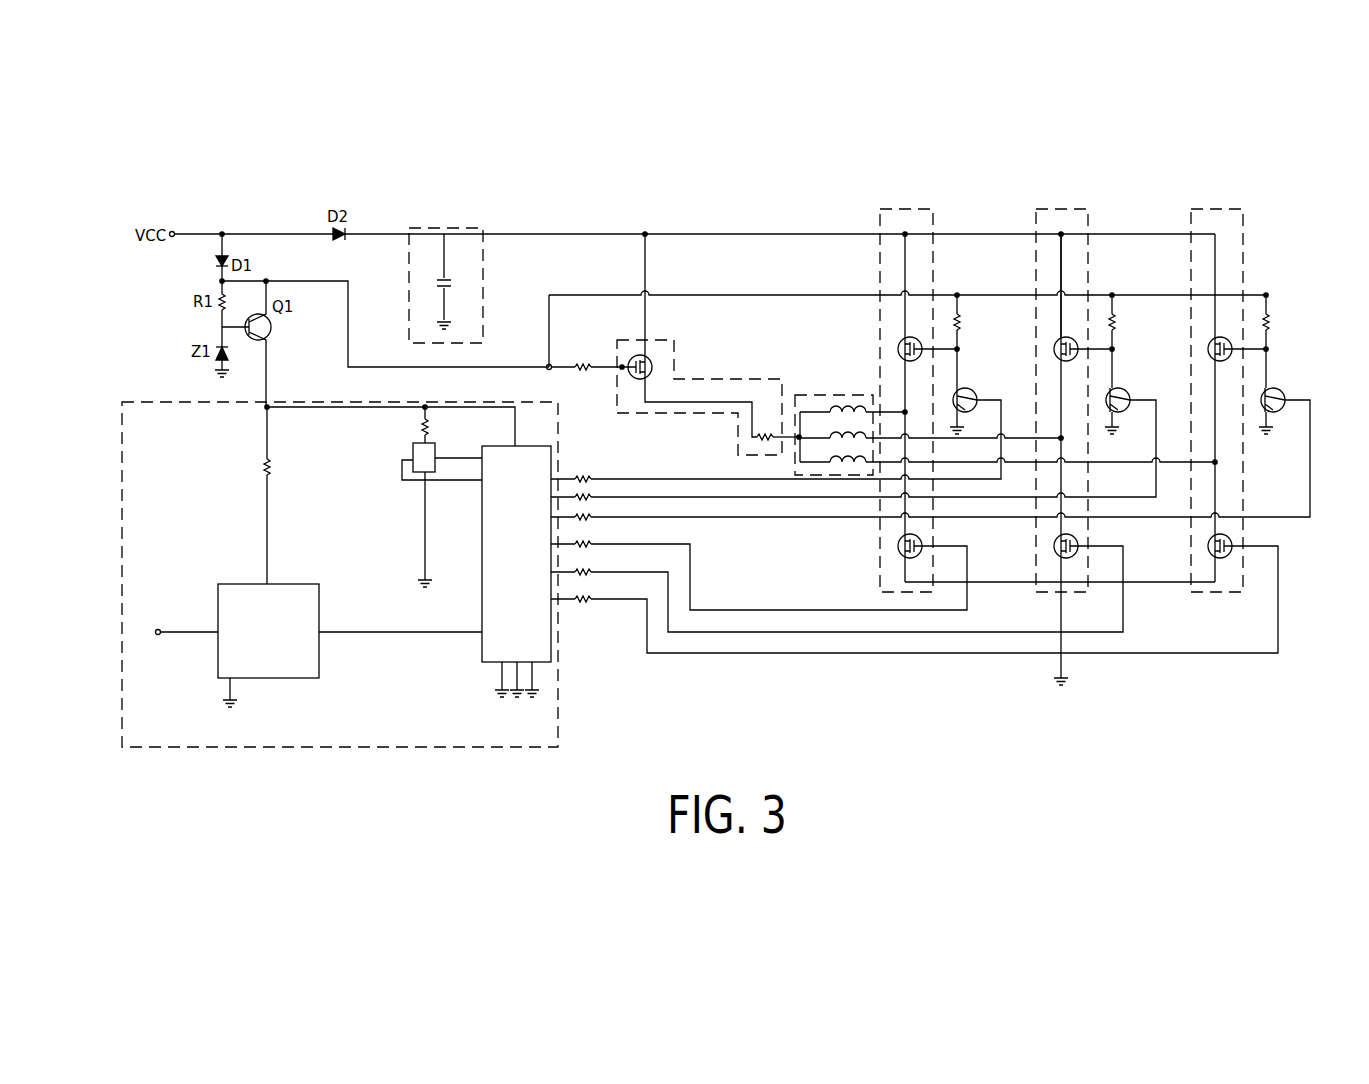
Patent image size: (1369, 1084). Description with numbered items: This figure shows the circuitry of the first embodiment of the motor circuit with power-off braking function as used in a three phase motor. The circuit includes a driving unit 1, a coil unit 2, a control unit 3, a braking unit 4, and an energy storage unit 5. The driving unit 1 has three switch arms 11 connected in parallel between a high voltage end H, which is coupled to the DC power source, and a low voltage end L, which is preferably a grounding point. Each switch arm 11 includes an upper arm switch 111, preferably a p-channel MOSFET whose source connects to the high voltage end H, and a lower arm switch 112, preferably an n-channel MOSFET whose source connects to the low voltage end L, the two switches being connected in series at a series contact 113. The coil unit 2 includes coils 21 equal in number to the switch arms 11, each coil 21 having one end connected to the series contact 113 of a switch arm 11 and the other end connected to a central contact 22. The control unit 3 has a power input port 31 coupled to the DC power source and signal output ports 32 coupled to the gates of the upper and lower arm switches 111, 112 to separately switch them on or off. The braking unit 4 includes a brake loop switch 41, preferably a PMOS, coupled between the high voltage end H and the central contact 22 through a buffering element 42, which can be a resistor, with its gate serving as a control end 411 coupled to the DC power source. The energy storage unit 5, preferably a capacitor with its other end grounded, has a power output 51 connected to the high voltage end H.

The driving unit 1 is at (1003, 805).
The switch arm 11 is at (908, 592).
The upper arm switch 111 is at (917, 362).
The lower arm switch 112 is at (923, 537).
The series contact 113 is at (905, 410).
The coil unit 2 is at (853, 390).
The coil 21 is at (835, 408).
The central contact 22 is at (799, 441).
The control unit 3 is at (365, 748).
The power input port 31 is at (268, 409).
The signal output port 32 is at (553, 479).
The braking unit 4 is at (712, 378).
The brake loop switch 41 is at (652, 355).
The control end 411 is at (622, 366).
The buffering element 42 is at (755, 437).
The energy storage unit 5 is at (486, 262).
The power output 51 is at (444, 233).
The high voltage end H is at (1061, 230).
The low voltage end L is at (1062, 592).